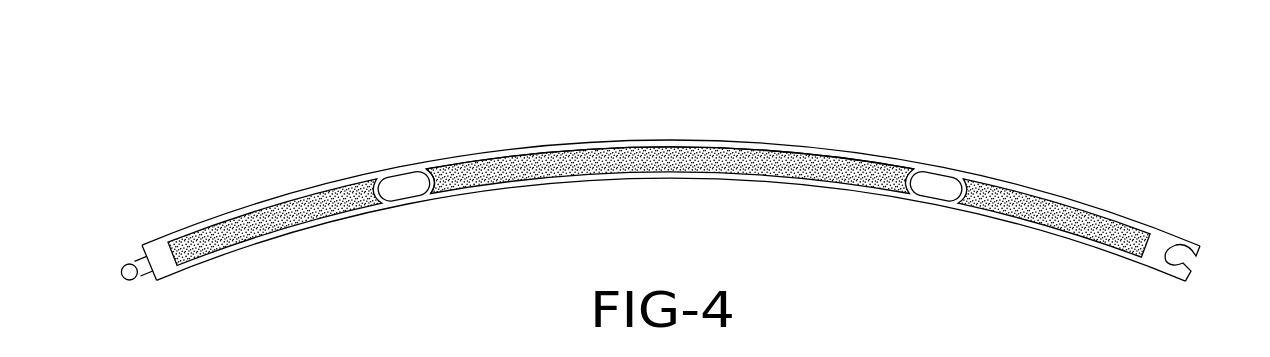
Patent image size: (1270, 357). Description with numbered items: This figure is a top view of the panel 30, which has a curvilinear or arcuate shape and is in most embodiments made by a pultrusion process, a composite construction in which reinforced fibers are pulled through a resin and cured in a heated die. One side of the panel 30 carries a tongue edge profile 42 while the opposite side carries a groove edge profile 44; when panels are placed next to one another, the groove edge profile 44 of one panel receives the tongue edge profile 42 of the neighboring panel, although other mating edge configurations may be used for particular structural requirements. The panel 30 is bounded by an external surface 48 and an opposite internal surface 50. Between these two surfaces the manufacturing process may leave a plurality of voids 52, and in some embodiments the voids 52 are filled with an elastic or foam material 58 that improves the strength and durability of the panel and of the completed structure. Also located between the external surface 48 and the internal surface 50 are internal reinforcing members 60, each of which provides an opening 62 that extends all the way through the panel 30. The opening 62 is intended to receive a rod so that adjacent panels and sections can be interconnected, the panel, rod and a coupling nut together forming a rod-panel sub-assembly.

The panel 30 is at (887, 141).
The tongue edge profile 42 is at (122, 266).
The groove edge profile 44 is at (1190, 270).
The external surface 48 is at (701, 140).
The internal surface 50 is at (672, 180).
The voids 52 is at (562, 158).
The elastic or foam material 58 is at (640, 158).
The internal reinforcing members 60 is at (435, 175).
The opening 62 is at (398, 184).